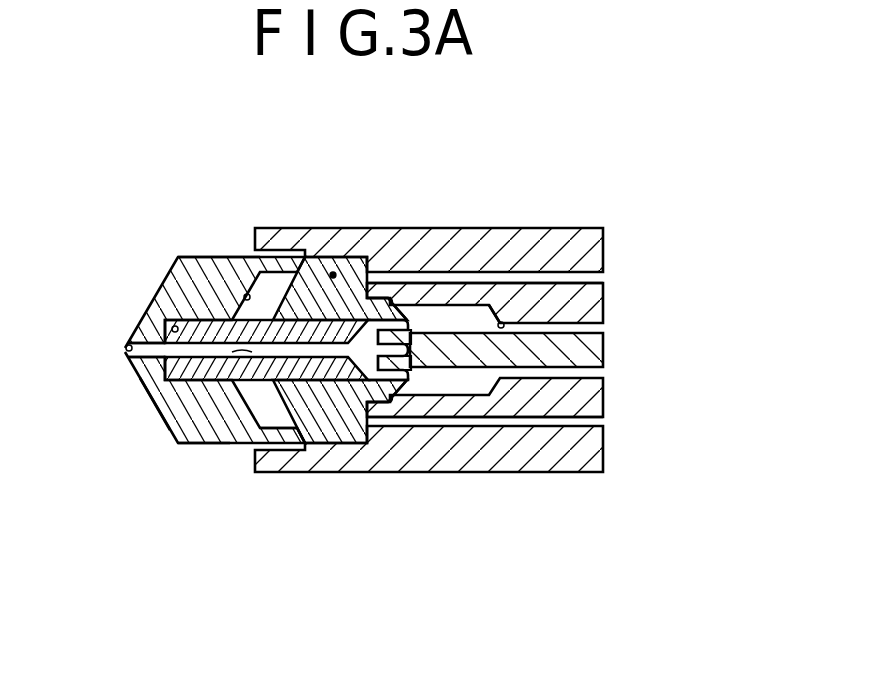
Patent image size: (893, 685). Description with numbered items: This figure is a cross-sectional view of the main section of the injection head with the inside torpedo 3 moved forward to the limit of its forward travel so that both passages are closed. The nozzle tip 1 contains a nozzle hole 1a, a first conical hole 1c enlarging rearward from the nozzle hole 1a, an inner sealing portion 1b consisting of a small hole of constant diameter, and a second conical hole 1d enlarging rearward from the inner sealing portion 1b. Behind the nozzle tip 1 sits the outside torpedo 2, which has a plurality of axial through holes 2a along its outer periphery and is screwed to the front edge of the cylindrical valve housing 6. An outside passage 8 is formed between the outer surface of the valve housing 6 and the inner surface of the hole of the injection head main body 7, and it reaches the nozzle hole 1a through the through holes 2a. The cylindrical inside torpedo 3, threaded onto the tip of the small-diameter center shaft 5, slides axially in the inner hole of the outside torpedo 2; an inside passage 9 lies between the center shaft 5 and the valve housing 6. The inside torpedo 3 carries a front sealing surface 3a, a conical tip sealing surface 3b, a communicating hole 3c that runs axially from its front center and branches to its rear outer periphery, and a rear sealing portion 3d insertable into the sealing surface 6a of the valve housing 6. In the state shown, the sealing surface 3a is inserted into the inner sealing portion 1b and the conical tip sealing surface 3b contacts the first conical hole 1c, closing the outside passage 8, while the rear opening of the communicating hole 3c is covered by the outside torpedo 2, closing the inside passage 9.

The nozzle tip 1 is at (143, 388).
The nozzle hole 1a is at (126, 351).
The inner sealing portion 1b is at (187, 298).
The first conical hole 1c is at (173, 325).
The second conical hole 1d is at (246, 294).
The outside torpedo 2 is at (330, 268).
The through holes 2a is at (332, 272).
The inside torpedo 3 is at (257, 372).
The sealing surface 3a is at (152, 300).
The conical tip sealing surface 3b is at (160, 398).
The communicating hole 3c is at (186, 430).
The sealing portion 3d is at (400, 380).
The center shaft 5 is at (531, 345).
The valve housing 6 is at (460, 290).
The sealing surface 6a is at (504, 320).
The injection head main body 7 is at (437, 224).
The outside passage 8 is at (487, 420).
The inside passage 9 is at (550, 373).